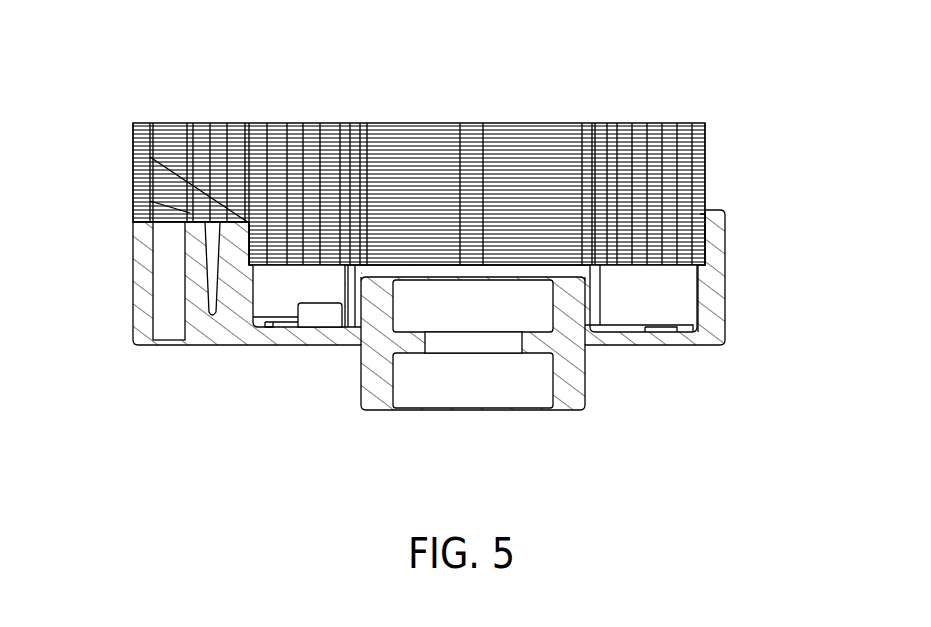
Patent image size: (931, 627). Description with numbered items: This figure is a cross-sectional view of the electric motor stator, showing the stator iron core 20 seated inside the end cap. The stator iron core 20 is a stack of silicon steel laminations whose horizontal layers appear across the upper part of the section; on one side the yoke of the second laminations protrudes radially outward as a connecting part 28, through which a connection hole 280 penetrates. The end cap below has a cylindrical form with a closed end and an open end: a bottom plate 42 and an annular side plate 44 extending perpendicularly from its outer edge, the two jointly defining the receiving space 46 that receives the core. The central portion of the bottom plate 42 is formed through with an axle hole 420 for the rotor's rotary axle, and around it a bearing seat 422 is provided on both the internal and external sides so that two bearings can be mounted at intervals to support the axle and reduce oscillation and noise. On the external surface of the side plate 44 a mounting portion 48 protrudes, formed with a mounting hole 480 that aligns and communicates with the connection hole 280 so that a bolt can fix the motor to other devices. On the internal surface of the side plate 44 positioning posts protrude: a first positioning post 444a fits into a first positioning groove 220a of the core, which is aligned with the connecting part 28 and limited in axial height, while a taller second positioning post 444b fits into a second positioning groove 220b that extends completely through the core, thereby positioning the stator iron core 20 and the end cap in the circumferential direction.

The stator iron core 20 is at (557, 155).
The connecting part 28 is at (135, 127).
The connection hole 280 is at (172, 135).
The first positioning groove 220a is at (133, 153).
The second positioning groove 220b is at (708, 210).
The first positioning post 444a is at (135, 201).
The second positioning post 444b is at (704, 244).
The mounting portion 48 is at (153, 312).
The mounting hole 480 is at (172, 270).
The bottom plate 42 is at (290, 345).
The axle hole 420 is at (458, 347).
The bearing seat 422 is at (520, 385).
The receiving space 46 is at (640, 297).
The side plate 44 is at (705, 283).